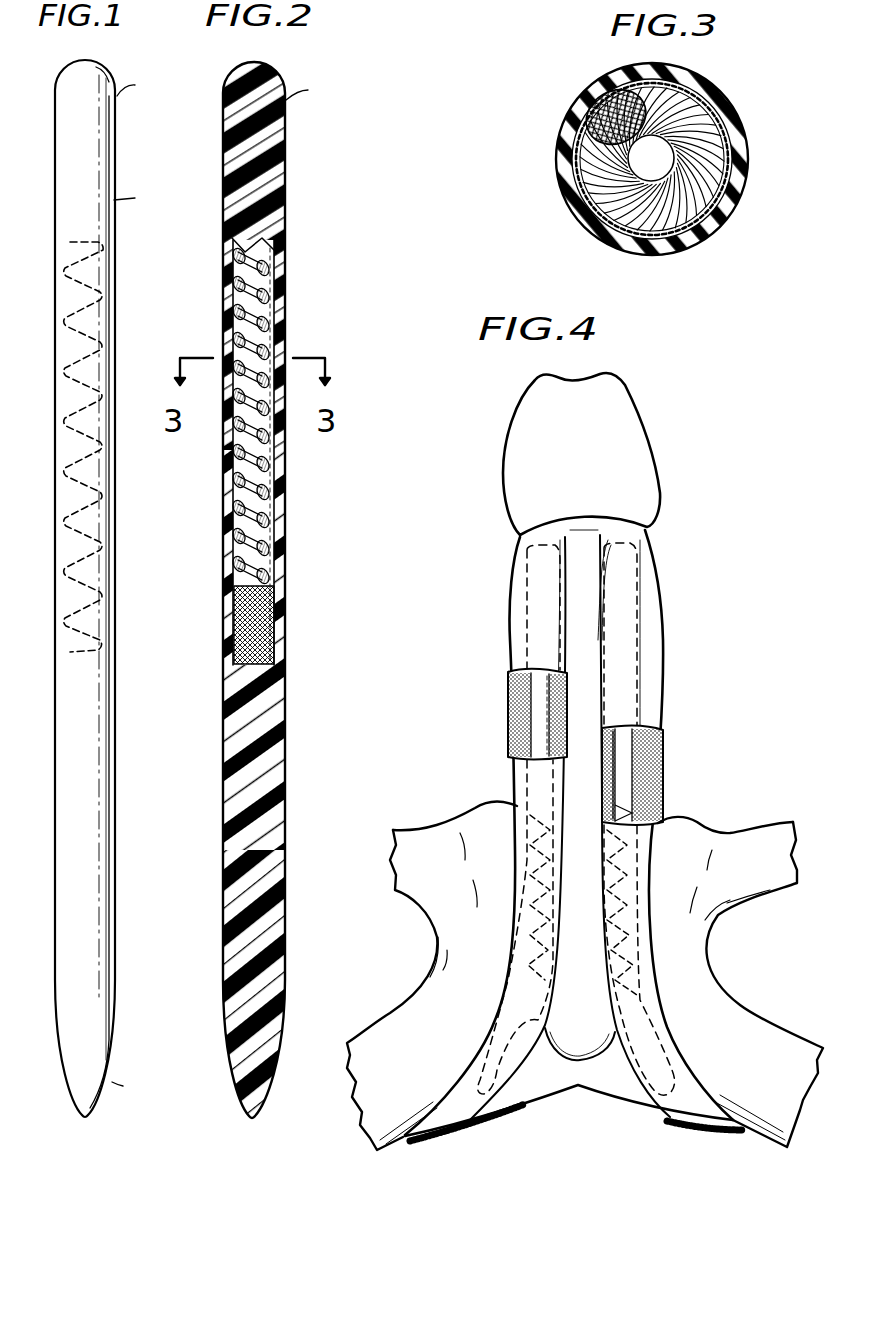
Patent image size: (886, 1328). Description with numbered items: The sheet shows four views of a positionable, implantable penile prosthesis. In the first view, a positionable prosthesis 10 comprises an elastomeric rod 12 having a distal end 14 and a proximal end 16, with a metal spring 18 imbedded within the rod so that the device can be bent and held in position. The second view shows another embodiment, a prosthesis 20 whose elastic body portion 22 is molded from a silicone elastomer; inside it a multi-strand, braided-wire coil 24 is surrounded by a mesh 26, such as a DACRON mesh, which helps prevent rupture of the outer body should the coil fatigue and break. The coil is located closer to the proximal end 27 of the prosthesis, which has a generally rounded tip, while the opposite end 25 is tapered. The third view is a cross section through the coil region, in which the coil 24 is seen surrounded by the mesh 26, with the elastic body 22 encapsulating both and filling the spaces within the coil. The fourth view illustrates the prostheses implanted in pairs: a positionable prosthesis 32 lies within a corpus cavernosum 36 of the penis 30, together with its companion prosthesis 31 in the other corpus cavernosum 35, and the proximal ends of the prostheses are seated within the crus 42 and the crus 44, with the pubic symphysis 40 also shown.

In FIG. 1, the positionable prosthesis 10 is at (129, 158).
In FIG. 1, the elastomeric rod 12 is at (140, 201).
In FIG. 1, the distal end 14 is at (143, 89).
In FIG. 1, the proximal end 16 is at (134, 1090).
In FIG. 1, the metal spring 18 is at (88, 300).
In FIG. 2, the prosthesis 20 is at (288, 592).
In FIG. 2, the elastic body portion 22 is at (276, 232).
In FIG. 3, the elastic body portion 22 is at (722, 102).
In FIG. 2, the braided-wire coil 24 is at (272, 340).
In FIG. 3, the braided-wire coil 24 is at (596, 104).
In FIG. 2, the distal end portion 25 is at (284, 1004).
In FIG. 2, the mesh 26 is at (276, 606).
In FIG. 3, the mesh 26 is at (728, 176).
In FIG. 2, the proximal end 27 is at (313, 90).
In FIG. 4, the penis 30 is at (672, 638).
In FIG. 4, the corpus cavernosum 31 is at (620, 758).
In FIG. 4, the positionable prosthesis 32 is at (540, 710).
In FIG. 4, the tunica albuginea 35 is at (662, 790).
In FIG. 4, the corpus cavernosum 36 is at (509, 740).
In FIG. 4, the pubic symphysis 40 is at (707, 825).
In FIG. 4, the crus 42 is at (513, 1083).
In FIG. 4, the crus 44 is at (640, 1083).